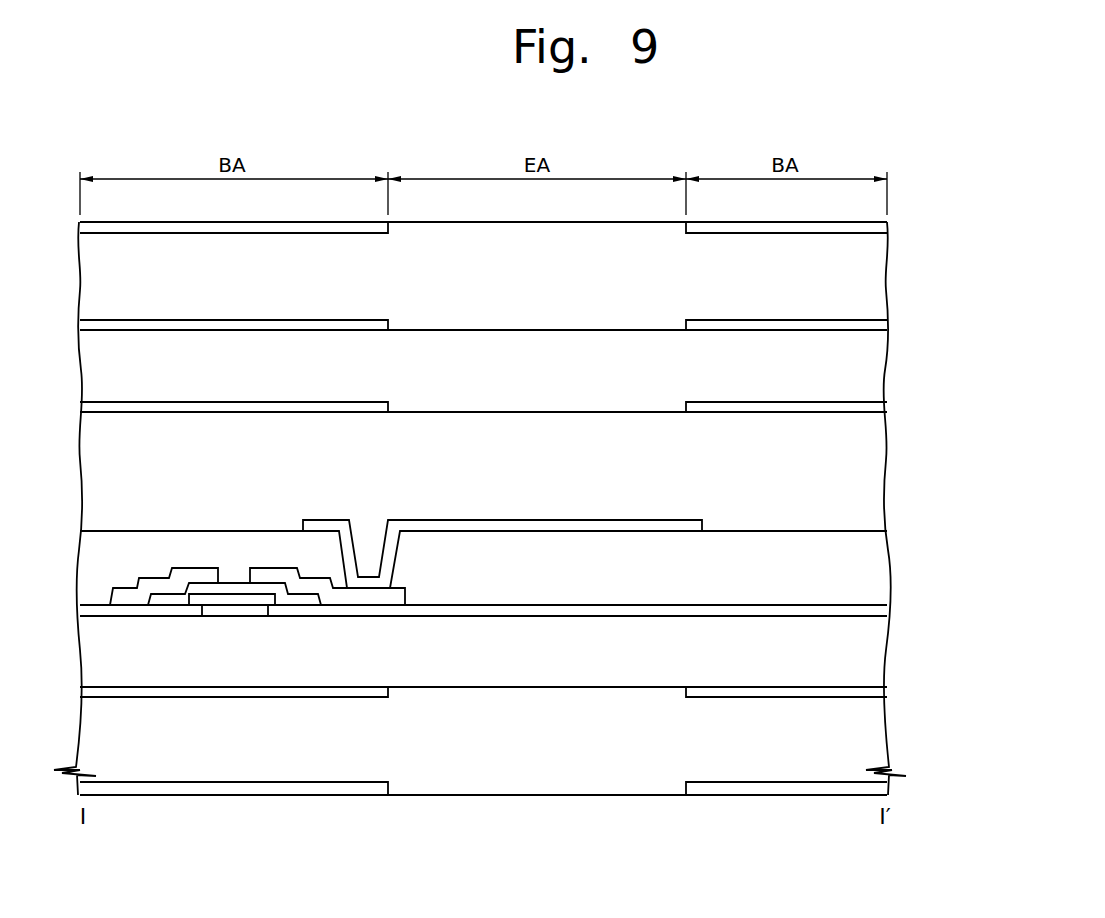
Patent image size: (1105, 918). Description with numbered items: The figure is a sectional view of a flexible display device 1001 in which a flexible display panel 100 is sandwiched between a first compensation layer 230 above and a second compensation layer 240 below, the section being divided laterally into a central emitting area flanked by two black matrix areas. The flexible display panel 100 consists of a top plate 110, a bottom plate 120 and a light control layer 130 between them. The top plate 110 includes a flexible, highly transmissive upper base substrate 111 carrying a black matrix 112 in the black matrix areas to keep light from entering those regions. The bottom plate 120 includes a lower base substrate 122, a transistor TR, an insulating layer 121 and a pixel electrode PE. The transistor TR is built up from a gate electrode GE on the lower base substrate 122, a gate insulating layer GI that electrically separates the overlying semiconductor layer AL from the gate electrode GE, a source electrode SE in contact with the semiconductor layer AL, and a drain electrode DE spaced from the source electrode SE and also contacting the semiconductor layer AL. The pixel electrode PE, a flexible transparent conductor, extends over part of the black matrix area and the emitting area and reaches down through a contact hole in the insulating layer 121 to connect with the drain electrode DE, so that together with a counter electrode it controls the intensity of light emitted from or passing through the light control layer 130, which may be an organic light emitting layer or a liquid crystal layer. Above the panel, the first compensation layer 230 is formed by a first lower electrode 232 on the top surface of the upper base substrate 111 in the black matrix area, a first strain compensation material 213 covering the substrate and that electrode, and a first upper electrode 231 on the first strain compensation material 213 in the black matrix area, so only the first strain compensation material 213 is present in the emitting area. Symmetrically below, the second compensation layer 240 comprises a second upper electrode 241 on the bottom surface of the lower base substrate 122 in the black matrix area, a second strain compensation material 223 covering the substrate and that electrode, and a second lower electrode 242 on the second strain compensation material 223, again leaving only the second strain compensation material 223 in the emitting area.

The flexible display device 1001 is at (722, 147).
The flexible display panel 100 is at (1025, 372).
The top plate 110 is at (968, 360).
The upper base substrate 111 is at (873, 368).
The black matrix 112 is at (873, 409).
The bottom plate 120 is at (968, 558).
The insulating layer 121 is at (873, 569).
The lower base substrate 122 is at (873, 656).
The light control layer 130 is at (873, 463).
The first compensation layer 230 is at (968, 222).
The first upper electrode 231 is at (873, 233).
The first strain compensation material 213 is at (873, 279).
The first lower electrode 232 is at (873, 331).
The second compensation layer 240 is at (970, 683).
The second upper electrode 241 is at (873, 694).
The second strain compensation material 223 is at (873, 741).
The second lower electrode 242 is at (873, 788).
The pixel electrode PE is at (474, 525).
The transistor TR is at (137, 866).
The source electrode SE is at (132, 602).
The semiconductor layer AL is at (180, 600).
The gate electrode GE is at (240, 611).
The gate insulating layer GI is at (293, 611).
The drain electrode DE is at (342, 600).